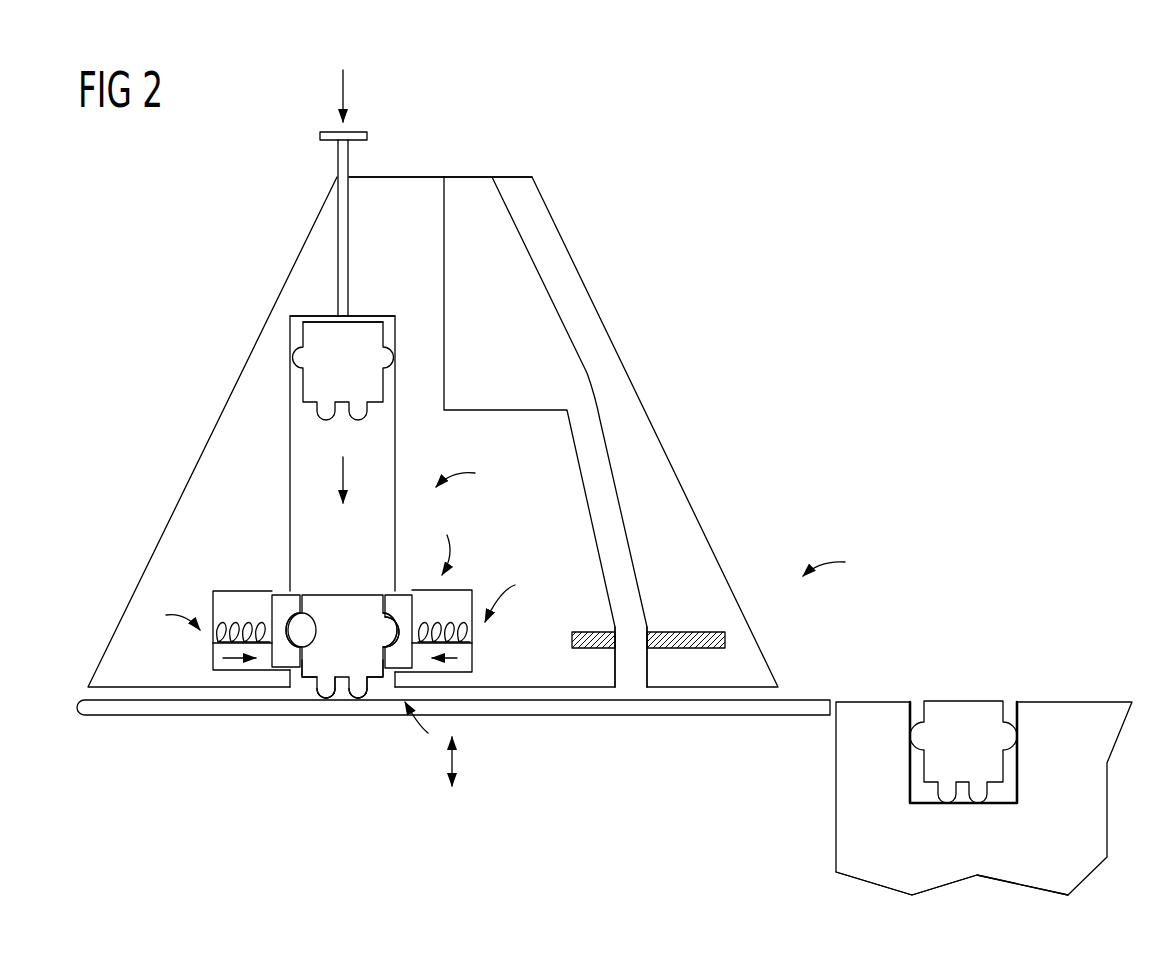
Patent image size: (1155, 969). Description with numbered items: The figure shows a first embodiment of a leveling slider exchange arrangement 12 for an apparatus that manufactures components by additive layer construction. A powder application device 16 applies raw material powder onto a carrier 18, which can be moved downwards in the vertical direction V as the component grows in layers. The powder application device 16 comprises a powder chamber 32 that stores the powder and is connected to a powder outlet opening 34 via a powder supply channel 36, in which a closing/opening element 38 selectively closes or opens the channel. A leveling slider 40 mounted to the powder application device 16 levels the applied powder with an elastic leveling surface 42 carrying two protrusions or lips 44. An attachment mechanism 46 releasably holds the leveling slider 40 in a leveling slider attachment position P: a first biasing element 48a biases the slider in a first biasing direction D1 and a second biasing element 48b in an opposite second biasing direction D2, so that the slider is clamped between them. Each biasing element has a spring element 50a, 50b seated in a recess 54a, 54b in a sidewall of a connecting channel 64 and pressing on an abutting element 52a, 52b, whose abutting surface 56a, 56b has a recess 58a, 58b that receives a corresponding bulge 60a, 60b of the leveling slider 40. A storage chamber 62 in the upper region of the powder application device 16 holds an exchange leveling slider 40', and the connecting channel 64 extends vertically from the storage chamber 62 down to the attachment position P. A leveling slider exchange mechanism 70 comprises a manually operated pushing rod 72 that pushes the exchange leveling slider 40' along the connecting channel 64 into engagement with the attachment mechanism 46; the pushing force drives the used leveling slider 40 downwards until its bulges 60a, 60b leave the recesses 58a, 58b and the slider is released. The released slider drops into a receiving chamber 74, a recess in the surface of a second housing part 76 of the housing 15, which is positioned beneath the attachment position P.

The leveling slider exchange arrangement 12 is at (838, 563).
The housing 15 is at (1073, 712).
The powder application device 16 is at (533, 190).
The carrier 18 is at (807, 700).
The powder chamber 32 is at (473, 182).
The powder outlet opening 34 is at (630, 688).
The powder supply channel 36 is at (608, 508).
The closing/opening element 38 is at (687, 630).
The leveling slider 40 is at (652, 663).
The exchange leveling slider 40' is at (365, 371).
The leveling surface 42 is at (340, 690).
The protrusions or lips 44 is at (365, 700).
The attachment mechanism 46 is at (450, 541).
The first biasing element 48a is at (165, 616).
The second biasing element 48b is at (518, 595).
The spring element 50a is at (235, 620).
The spring element 50b is at (448, 620).
The abutting element 52a is at (283, 600).
The abutting element 52b is at (402, 597).
The recess 54a is at (213, 654).
The recess 54b is at (473, 652).
The abutting surface 56a is at (380, 680).
The abutting surface 56b is at (298, 680).
The recess 58a is at (305, 608).
The recess 58b is at (384, 607).
The protrusion or bulge 60a is at (308, 624).
The protrusion or bulge 60b is at (380, 638).
The storage chamber 62 is at (385, 318).
The connecting channel 64 is at (383, 463).
The leveling slider exchange mechanism 70 is at (469, 475).
The pushing rod 72 is at (338, 167).
The receiving chamber 74 is at (1005, 788).
The second housing part 76 is at (983, 861).
The first biasing direction D1 is at (237, 662).
The second biasing direction D2 is at (452, 660).
The leveling slider attachment position P is at (421, 731).
The vertical direction V is at (462, 761).